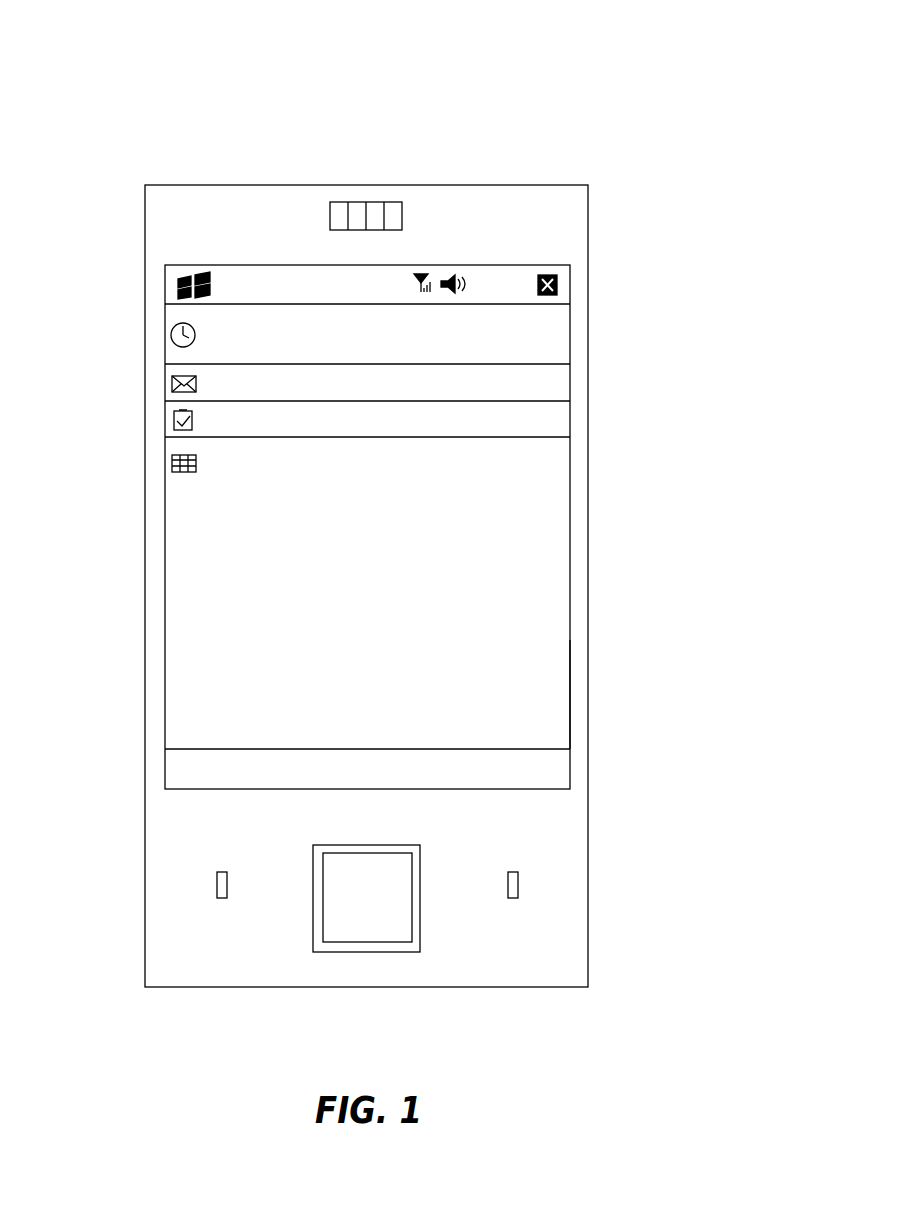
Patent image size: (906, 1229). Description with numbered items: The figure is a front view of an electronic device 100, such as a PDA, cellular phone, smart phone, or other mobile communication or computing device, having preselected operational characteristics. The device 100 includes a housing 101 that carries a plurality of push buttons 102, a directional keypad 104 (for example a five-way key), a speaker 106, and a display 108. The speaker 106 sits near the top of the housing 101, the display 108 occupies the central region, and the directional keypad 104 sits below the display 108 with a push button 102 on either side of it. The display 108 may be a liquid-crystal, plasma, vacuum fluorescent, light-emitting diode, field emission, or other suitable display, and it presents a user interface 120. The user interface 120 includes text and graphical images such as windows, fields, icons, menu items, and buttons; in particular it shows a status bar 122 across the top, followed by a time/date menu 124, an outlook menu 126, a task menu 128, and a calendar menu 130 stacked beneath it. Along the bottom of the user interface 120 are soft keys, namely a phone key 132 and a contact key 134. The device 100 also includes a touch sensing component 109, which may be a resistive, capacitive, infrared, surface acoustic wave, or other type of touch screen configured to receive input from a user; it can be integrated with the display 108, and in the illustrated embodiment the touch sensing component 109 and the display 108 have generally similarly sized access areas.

The electronic device 100 is at (641, 112).
The housing 101 is at (588, 872).
The push buttons 102 is at (222, 897).
The directional keypad 104 is at (340, 928).
The speaker 106 is at (370, 202).
The display 108 is at (555, 540).
The touch sensing component 109 is at (570, 712).
The user interface 120 is at (161, 298).
The status bar 122 is at (522, 264).
The time/date menu 124 is at (558, 336).
The outlook menu 126 is at (558, 386).
The task menu 128 is at (558, 420).
The calendar menu 130 is at (490, 630).
The phone key 132 is at (183, 770).
The contact key 134 is at (558, 767).